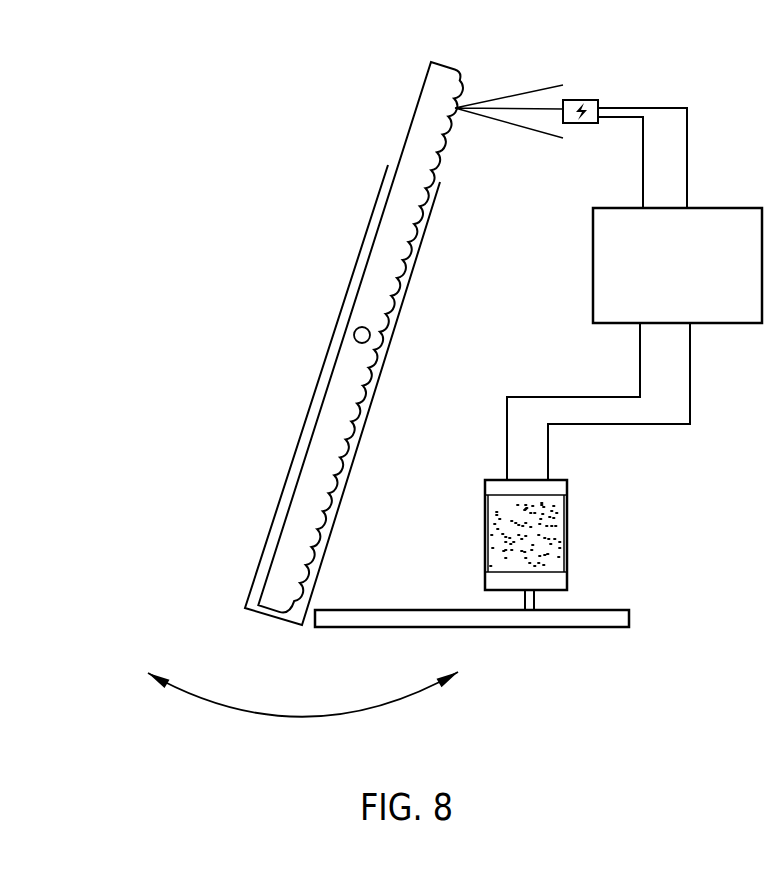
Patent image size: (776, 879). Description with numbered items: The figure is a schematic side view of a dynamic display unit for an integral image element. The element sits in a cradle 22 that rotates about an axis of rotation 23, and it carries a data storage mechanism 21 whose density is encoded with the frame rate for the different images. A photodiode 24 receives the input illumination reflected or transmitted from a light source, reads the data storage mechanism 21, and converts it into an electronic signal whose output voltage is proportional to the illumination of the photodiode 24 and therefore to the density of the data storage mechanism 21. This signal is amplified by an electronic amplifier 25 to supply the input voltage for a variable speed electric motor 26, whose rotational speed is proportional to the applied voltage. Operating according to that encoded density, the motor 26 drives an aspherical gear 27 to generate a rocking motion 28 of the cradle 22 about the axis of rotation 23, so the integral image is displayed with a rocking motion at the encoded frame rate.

The data storage mechanism 21 is at (425, 125).
The cradle 22 is at (368, 223).
The axis of rotation 23 is at (354, 333).
The photodiode 24 is at (588, 98).
The electronic amplifier 25 is at (718, 217).
The variable speed electric motor 26 is at (568, 508).
The aspherical gear 27 is at (593, 617).
The rocking motion 28 is at (403, 703).